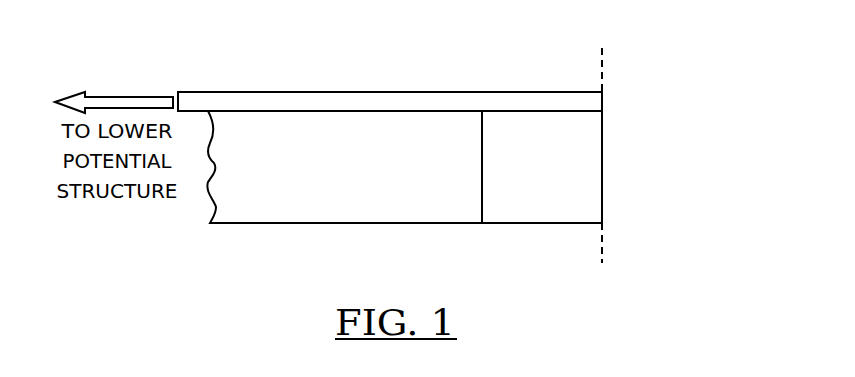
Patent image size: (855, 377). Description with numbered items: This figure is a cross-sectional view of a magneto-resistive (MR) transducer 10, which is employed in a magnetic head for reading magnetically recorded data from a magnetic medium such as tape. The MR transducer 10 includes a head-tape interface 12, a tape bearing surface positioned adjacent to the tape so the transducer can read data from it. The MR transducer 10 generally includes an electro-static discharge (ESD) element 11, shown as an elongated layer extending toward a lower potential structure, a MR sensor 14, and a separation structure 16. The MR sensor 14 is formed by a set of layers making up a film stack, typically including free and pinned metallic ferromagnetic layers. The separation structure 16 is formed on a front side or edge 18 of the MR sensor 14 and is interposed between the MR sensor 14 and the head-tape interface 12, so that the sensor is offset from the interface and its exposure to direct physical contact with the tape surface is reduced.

The magneto-resistive (MR) transducer 10 is at (263, 79).
The electro-static discharge (ESD) element 11 is at (448, 98).
The head-tape interface 12 is at (602, 67).
The MR sensor 14 is at (374, 175).
The separation structure 16 is at (559, 173).
The front side or edge of MR sensor 18 is at (482, 200).